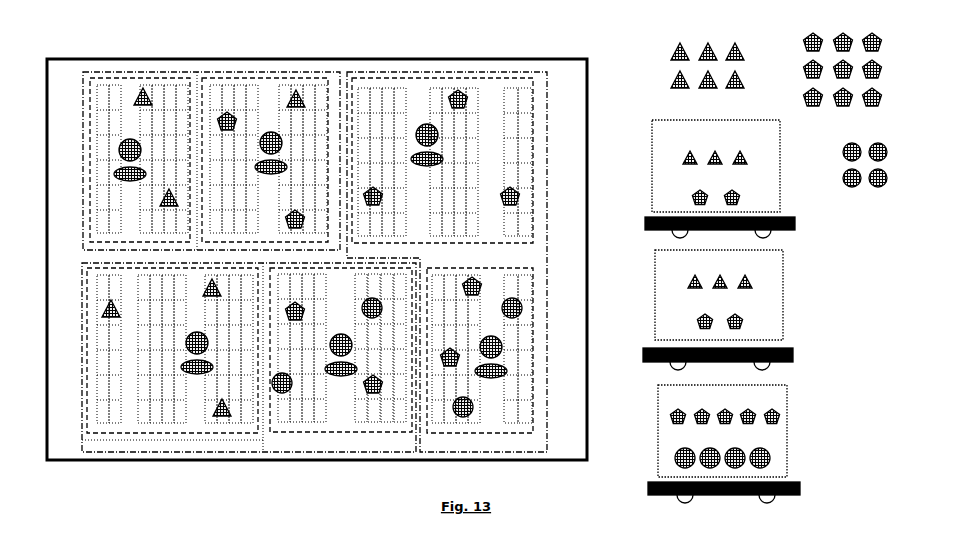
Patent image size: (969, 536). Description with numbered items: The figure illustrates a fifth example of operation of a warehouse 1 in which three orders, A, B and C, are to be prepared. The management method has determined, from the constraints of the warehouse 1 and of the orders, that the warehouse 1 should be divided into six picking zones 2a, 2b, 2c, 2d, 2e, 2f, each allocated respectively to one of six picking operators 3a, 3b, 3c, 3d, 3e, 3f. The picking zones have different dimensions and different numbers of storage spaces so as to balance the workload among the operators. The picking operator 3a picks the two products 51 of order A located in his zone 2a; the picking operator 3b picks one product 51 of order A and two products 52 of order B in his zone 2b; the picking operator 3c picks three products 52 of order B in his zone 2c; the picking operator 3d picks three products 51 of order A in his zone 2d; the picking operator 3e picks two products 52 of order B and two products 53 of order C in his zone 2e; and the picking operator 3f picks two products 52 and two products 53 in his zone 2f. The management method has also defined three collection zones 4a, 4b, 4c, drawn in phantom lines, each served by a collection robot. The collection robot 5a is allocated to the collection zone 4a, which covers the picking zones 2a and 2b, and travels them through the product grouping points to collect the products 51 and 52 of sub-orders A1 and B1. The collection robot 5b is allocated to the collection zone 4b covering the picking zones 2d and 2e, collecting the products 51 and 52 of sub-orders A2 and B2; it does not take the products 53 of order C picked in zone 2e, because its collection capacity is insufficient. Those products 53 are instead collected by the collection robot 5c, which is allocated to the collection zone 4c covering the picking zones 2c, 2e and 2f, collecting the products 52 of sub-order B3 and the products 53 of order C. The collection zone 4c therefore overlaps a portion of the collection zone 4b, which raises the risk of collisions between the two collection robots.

The warehouse 1 is at (562, 60).
The picking zone 2a is at (117, 78).
The picking zone 2b is at (297, 78).
The picking zone 2c is at (453, 78).
The picking zone 2d is at (132, 434).
The picking zone 2e is at (307, 434).
The picking zone 2f is at (486, 434).
The picking operator 3a is at (128, 138).
The picking operator 3b is at (270, 131).
The picking operator 3c is at (425, 124).
The picking operator 3d is at (191, 385).
The picking operator 3e is at (333, 380).
The picking operator 3f is at (490, 382).
The collection zone 4a is at (83, 150).
The collection zone 4b is at (83, 357).
The collection zone 4c is at (530, 72).
The product of order A 51 is at (147, 88).
The product of order B 52 is at (226, 112).
The product of order C 53 is at (280, 395).
The collection robot 5a is at (795, 224).
The collection robot 5b is at (795, 355).
The collection robot 5c is at (648, 488).